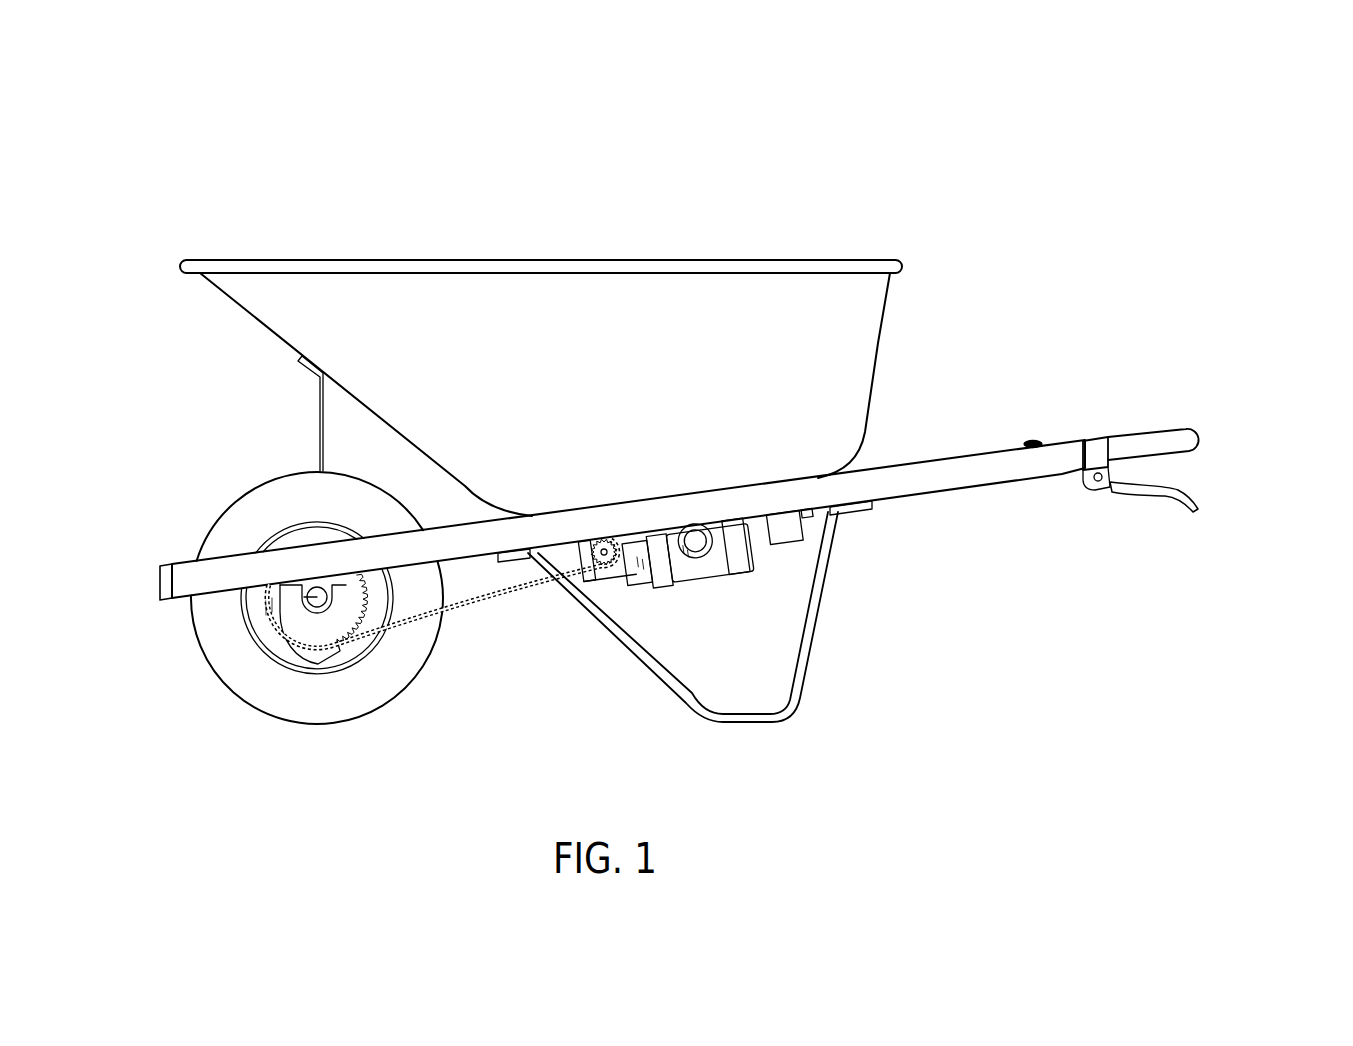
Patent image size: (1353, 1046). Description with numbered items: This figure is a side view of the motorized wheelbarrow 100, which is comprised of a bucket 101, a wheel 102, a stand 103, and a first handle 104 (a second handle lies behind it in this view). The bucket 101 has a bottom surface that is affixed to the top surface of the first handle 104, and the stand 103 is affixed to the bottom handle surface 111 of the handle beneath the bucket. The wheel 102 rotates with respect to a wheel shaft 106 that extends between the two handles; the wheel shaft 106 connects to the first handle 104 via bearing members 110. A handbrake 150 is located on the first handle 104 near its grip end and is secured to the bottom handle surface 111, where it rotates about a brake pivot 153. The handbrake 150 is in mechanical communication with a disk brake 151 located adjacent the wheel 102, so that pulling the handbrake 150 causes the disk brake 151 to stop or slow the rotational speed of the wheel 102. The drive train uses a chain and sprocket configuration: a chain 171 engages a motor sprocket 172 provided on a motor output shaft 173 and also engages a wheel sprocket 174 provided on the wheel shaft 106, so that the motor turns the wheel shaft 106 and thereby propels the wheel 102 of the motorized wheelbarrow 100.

The motorized wheelbarrow 100 is at (673, 473).
The bucket 101 is at (878, 343).
The wheel 102 is at (263, 658).
The stand 103 is at (825, 610).
The first handle 104 is at (222, 566).
The wheel shaft 106 is at (303, 599).
The bearing members 110 is at (543, 651).
The bottom handle surface 111 is at (988, 485).
The handbrake 150 is at (1147, 497).
The disk brake 151 is at (288, 651).
The brake pivot 153 is at (1107, 486).
The chain 171 is at (520, 583).
The motor sprocket 172 is at (604, 556).
The motor output shaft 173 is at (623, 575).
The wheel sprocket 174 is at (370, 602).